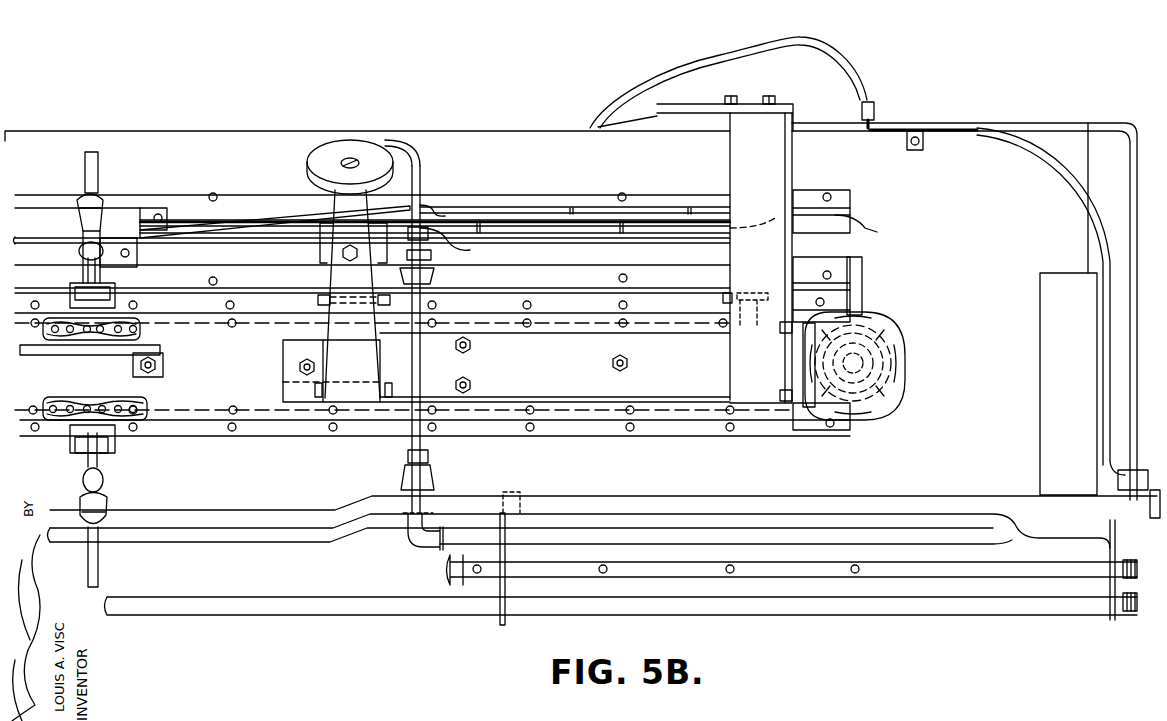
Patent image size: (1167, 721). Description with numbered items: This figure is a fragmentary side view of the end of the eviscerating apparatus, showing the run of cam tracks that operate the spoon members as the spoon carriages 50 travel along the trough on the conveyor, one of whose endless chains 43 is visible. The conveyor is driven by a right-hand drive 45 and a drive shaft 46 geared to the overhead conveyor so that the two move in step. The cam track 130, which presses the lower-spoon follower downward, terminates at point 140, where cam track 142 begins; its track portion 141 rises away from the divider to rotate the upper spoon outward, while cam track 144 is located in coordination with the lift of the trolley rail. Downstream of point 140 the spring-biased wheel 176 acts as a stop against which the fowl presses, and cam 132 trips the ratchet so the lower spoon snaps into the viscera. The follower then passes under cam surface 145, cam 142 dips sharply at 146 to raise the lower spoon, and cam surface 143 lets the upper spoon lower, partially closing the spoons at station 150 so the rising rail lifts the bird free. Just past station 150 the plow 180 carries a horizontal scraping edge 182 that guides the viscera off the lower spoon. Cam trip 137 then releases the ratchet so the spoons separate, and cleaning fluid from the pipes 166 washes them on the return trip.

The cam track 130 is at (33, 237).
The spoon carriage 50 is at (110, 165).
The point 140 is at (230, 178).
The track portion 141 is at (233, 220).
The tire or wheel 176 is at (332, 140).
The station 150 is at (462, 122).
The cam surface 143 is at (422, 205).
The cam track 142 is at (567, 201).
The cam track 144 is at (650, 226).
The cam surface 145 is at (380, 223).
The cam dip 146 is at (466, 249).
The cam 132 is at (317, 300).
The cam trip 137 is at (723, 297).
The endless chain 43 is at (133, 403).
The drive shaft 46 is at (857, 270).
The right-hand drive 45 is at (907, 329).
The plow 180 is at (853, 50).
The scraping edge 182 is at (712, 80).
The pipe 166 is at (765, 497).